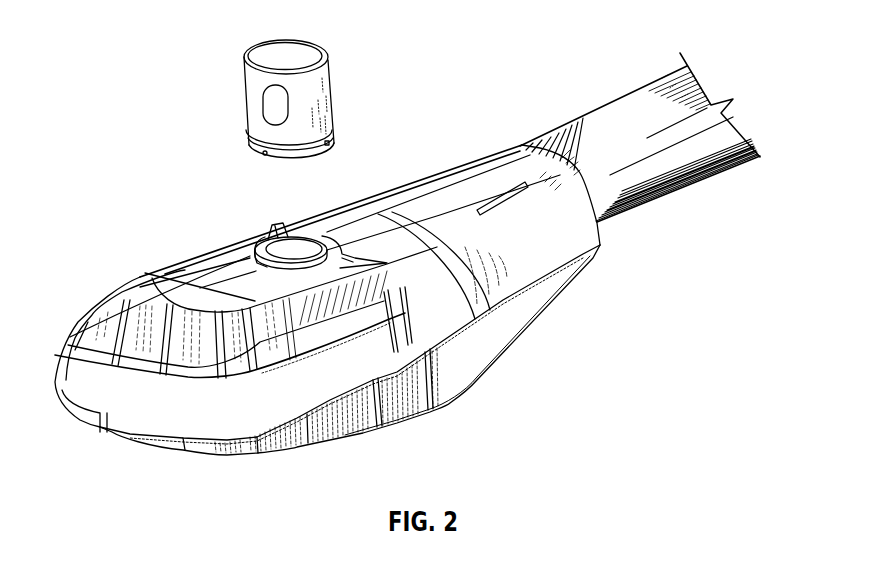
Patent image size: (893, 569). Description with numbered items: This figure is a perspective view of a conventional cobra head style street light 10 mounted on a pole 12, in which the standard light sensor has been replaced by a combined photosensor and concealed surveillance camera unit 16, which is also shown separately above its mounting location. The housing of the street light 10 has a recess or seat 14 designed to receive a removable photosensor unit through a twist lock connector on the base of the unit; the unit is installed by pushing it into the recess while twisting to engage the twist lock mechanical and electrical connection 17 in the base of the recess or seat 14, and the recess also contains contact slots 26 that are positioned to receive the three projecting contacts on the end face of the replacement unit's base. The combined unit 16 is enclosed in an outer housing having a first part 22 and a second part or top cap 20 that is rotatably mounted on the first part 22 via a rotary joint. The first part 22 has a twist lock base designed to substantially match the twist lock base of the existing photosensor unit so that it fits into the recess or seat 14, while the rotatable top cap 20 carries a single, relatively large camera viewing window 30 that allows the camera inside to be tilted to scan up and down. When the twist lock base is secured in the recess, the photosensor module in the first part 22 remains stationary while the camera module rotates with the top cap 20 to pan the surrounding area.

The street light 10 is at (467, 231).
The pole 12 is at (637, 205).
The recess or seat 14 is at (254, 248).
The combined photosensor and concealed surveillance camera unit 16 is at (291, 96).
The twist lock mechanical and electrical connection 17 is at (317, 240).
The second part or top cap 20 is at (250, 92).
The first part 22 is at (252, 140).
The contact slots 26 is at (300, 250).
The camera viewing window 30 is at (282, 107).